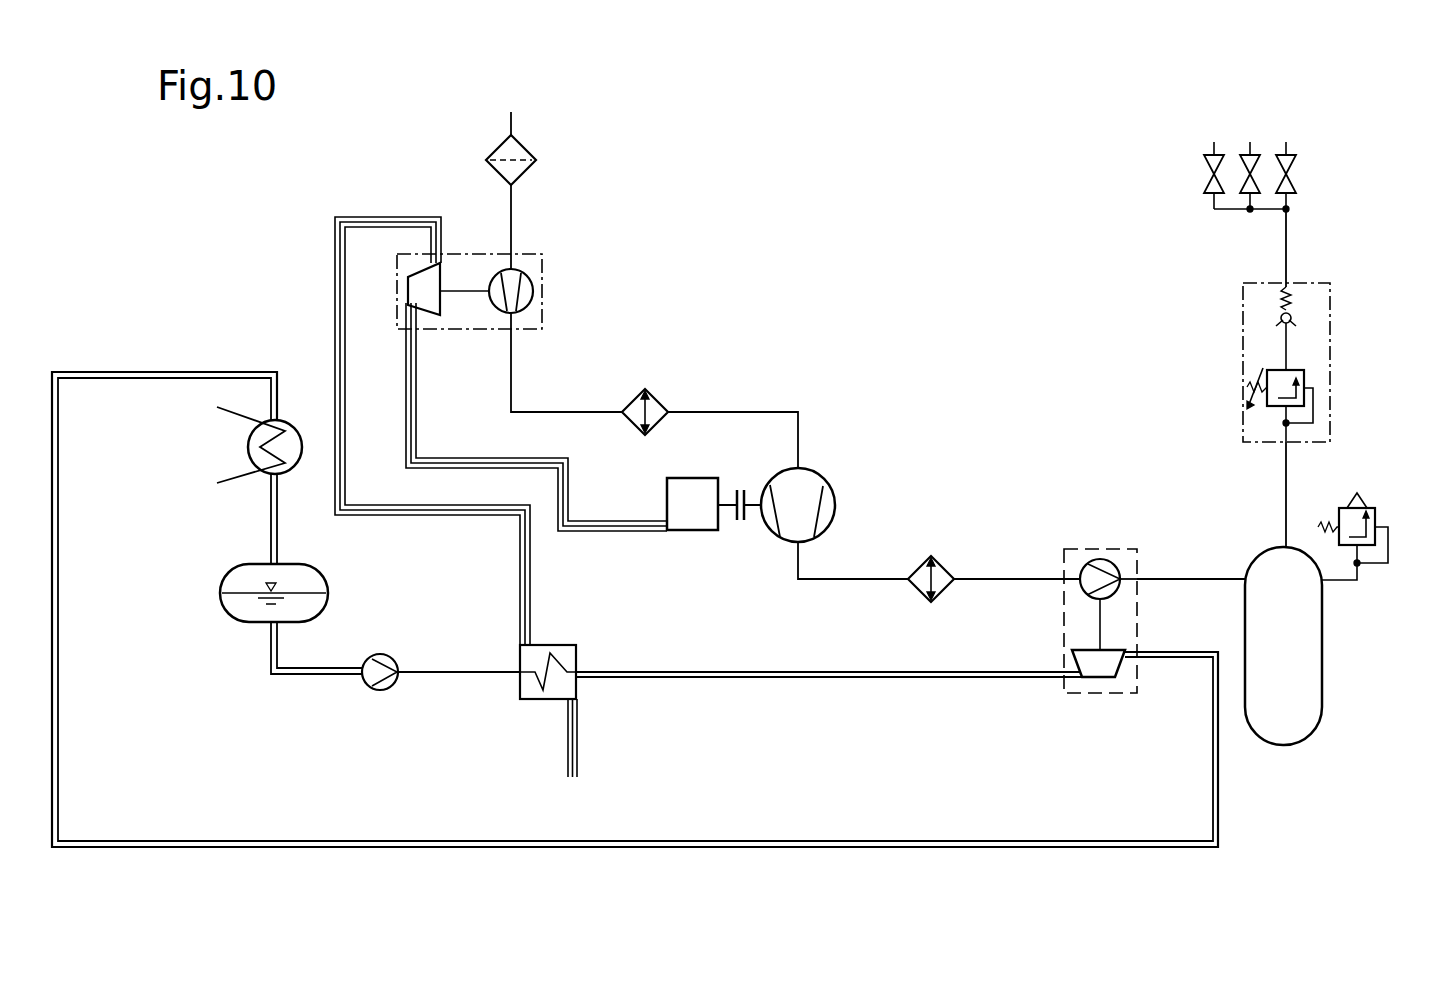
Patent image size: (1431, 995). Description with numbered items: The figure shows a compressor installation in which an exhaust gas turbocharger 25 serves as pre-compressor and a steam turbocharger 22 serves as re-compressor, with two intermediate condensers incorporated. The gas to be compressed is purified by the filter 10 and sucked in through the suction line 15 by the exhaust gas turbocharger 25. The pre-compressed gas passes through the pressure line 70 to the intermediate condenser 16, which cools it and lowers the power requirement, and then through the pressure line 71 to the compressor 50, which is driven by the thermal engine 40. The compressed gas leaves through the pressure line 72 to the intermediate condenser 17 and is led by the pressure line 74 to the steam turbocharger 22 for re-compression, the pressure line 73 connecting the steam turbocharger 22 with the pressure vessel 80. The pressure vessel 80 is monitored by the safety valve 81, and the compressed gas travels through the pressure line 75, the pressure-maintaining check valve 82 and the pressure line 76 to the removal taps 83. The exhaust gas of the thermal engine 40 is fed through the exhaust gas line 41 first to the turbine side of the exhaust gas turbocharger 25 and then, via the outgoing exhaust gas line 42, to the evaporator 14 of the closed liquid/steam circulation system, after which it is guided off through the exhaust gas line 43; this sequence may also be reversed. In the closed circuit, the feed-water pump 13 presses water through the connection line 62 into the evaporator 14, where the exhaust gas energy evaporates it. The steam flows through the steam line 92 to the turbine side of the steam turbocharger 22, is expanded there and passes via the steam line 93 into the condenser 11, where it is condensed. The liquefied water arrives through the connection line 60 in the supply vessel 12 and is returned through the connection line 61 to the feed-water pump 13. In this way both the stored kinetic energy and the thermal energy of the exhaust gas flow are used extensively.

The filter 10 is at (522, 141).
The suction line 15 is at (513, 193).
The exhaust gas turbocharger 25 is at (543, 293).
The condenser 11 is at (247, 447).
The connection line 60 is at (268, 550).
The supply vessel 12 is at (227, 567).
The connection line 61 is at (337, 678).
The feed-water pump 13 is at (390, 688).
The connection line 62 is at (433, 675).
The evaporator 14 is at (560, 702).
The exhaust gas line 43 is at (575, 735).
The exhaust gas line 41 is at (428, 460).
The exhaust gas line 42 is at (447, 517).
The pressure line 70 is at (520, 410).
The intermediate condenser 16 is at (667, 402).
The pressure line 71 is at (710, 412).
The thermal engine 40 is at (715, 477).
The compressor 50 is at (825, 477).
The pressure line 72 is at (830, 579).
The intermediate condenser 17 is at (950, 560).
The pressure line 74 is at (1038, 577).
The steam turbocharger 22 is at (1127, 547).
The pressure line 73 is at (1168, 580).
The steam line 92 is at (787, 678).
The steam line 93 is at (683, 842).
The pressure line 75 is at (1287, 522).
The pressure line 76 is at (1288, 267).
The pressure-maintaining check valve 82 is at (1331, 302).
The removal taps 83 is at (1299, 148).
The safety valve 81 is at (1377, 515).
The pressure vessel 80 is at (1323, 663).